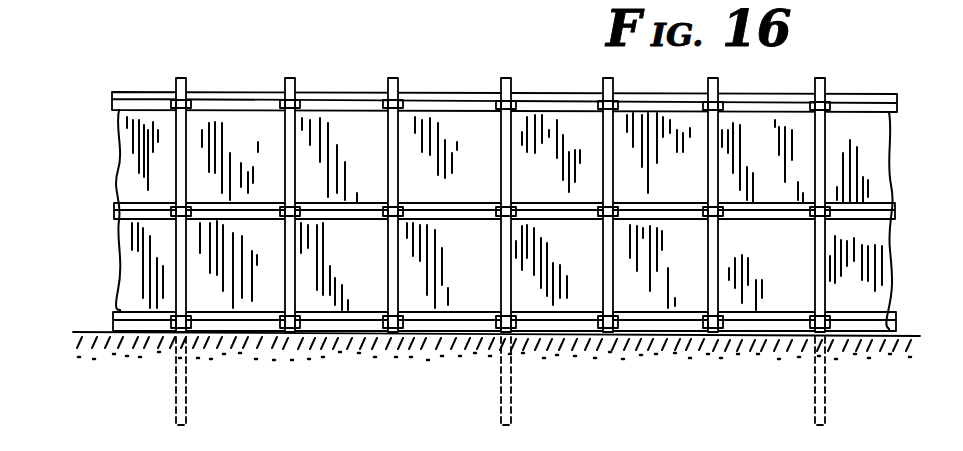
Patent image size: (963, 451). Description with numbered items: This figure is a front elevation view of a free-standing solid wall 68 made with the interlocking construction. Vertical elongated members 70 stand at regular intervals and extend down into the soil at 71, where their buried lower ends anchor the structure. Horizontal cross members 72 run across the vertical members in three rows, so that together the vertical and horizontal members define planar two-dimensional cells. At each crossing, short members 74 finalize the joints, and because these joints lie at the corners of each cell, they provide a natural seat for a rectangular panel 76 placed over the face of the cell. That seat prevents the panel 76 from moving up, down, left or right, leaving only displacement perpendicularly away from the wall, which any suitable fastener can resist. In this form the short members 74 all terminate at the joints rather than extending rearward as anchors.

The wall 68 is at (478, 201).
The vertical elongated members 70 is at (388, 259).
The soil 71 is at (172, 386).
The horizontal cross members 72 is at (318, 197).
The short members 74 is at (405, 103).
The panels 76 is at (236, 158).